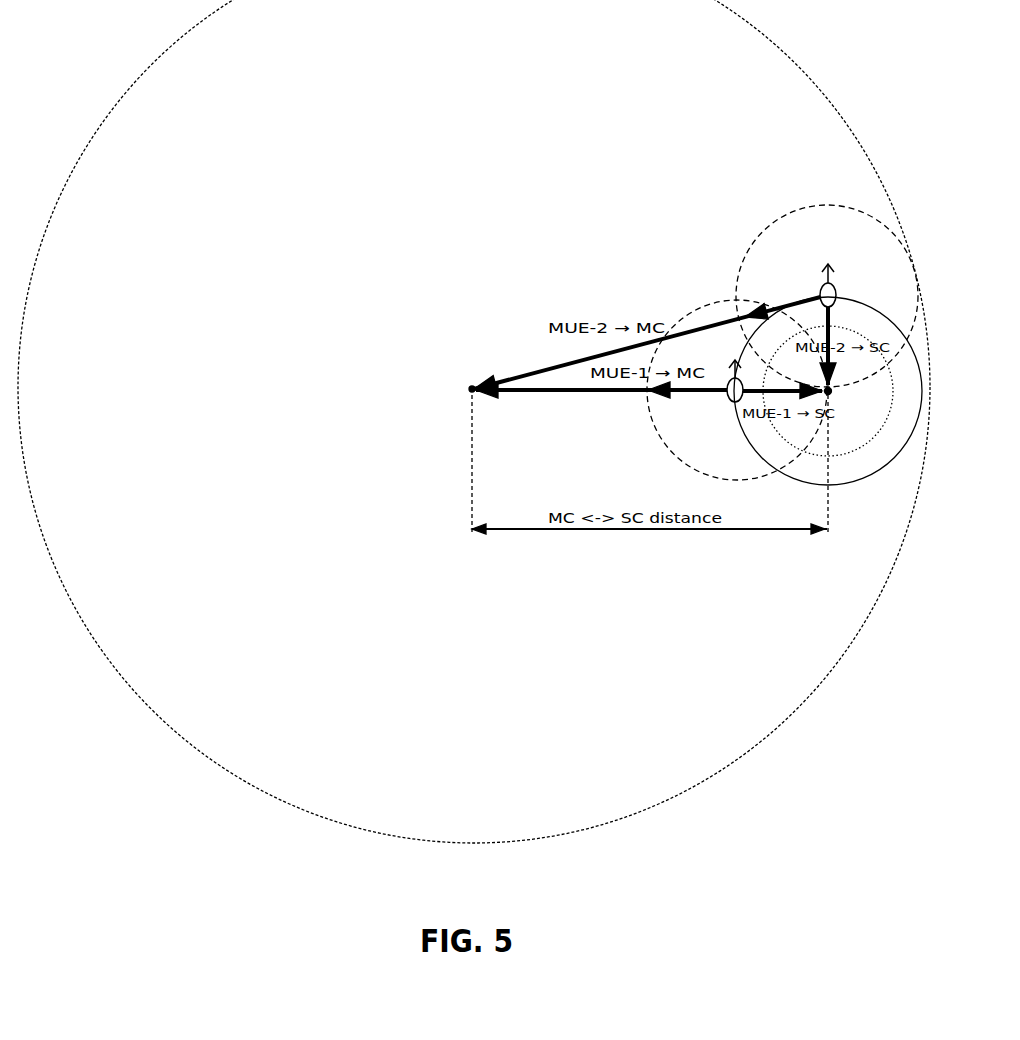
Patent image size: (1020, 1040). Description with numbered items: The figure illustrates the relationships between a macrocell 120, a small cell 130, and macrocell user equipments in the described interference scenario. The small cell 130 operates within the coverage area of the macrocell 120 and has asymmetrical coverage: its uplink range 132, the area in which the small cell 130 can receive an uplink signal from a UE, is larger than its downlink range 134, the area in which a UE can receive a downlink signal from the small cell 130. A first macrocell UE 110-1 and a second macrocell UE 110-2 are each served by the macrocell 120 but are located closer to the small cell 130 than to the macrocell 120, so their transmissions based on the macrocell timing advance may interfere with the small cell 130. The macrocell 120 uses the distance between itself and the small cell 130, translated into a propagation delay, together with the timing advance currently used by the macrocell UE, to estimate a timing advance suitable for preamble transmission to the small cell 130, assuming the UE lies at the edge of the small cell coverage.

The macrocell UE 110-1 is at (737, 390).
The macrocell UE 110-2 is at (827, 296).
The macrocell 120 is at (412, 376).
The small cell 130 is at (870, 420).
The uplink range 132 is at (893, 458).
The downlink range 134 is at (810, 452).